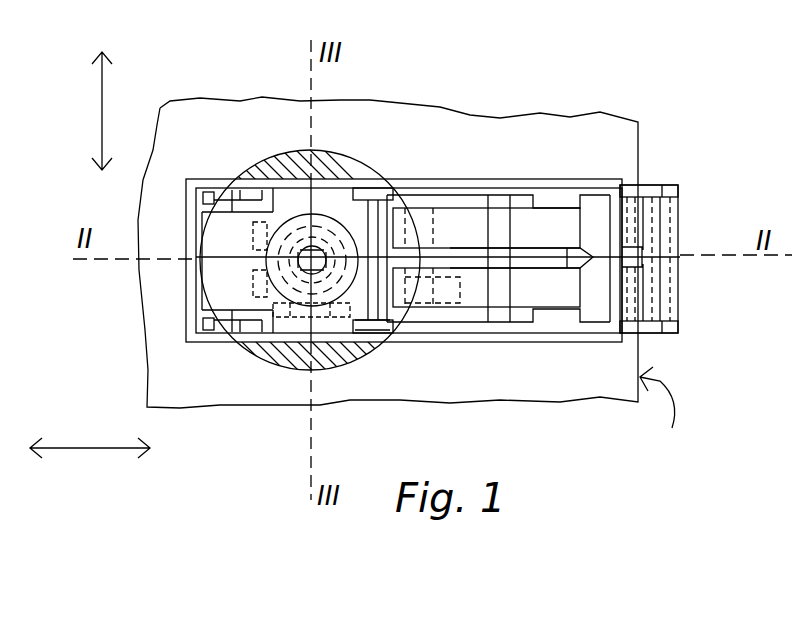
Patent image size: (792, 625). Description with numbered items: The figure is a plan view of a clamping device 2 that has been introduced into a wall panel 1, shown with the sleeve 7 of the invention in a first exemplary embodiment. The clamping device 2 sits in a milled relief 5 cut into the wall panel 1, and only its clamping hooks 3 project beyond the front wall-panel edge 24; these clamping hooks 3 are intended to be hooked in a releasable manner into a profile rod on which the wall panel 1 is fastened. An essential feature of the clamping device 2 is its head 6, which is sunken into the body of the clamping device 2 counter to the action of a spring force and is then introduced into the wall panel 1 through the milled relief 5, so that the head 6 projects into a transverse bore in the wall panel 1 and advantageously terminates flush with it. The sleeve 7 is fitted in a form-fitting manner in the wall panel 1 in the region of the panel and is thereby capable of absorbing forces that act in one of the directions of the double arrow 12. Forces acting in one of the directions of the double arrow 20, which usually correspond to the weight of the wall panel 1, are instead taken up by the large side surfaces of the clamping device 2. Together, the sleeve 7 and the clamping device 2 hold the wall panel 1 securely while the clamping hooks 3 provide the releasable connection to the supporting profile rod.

The wall panel 1 is at (560, 138).
The clamping device 2 is at (645, 186).
The clamping hooks 3 is at (722, 322).
The milled relief 5 is at (186, 300).
The head 6 is at (312, 313).
The sleeve 7 is at (347, 168).
The double arrow 12 is at (93, 449).
The double arrow 20 is at (103, 104).
The front wall-panel edge 24 is at (652, 424).